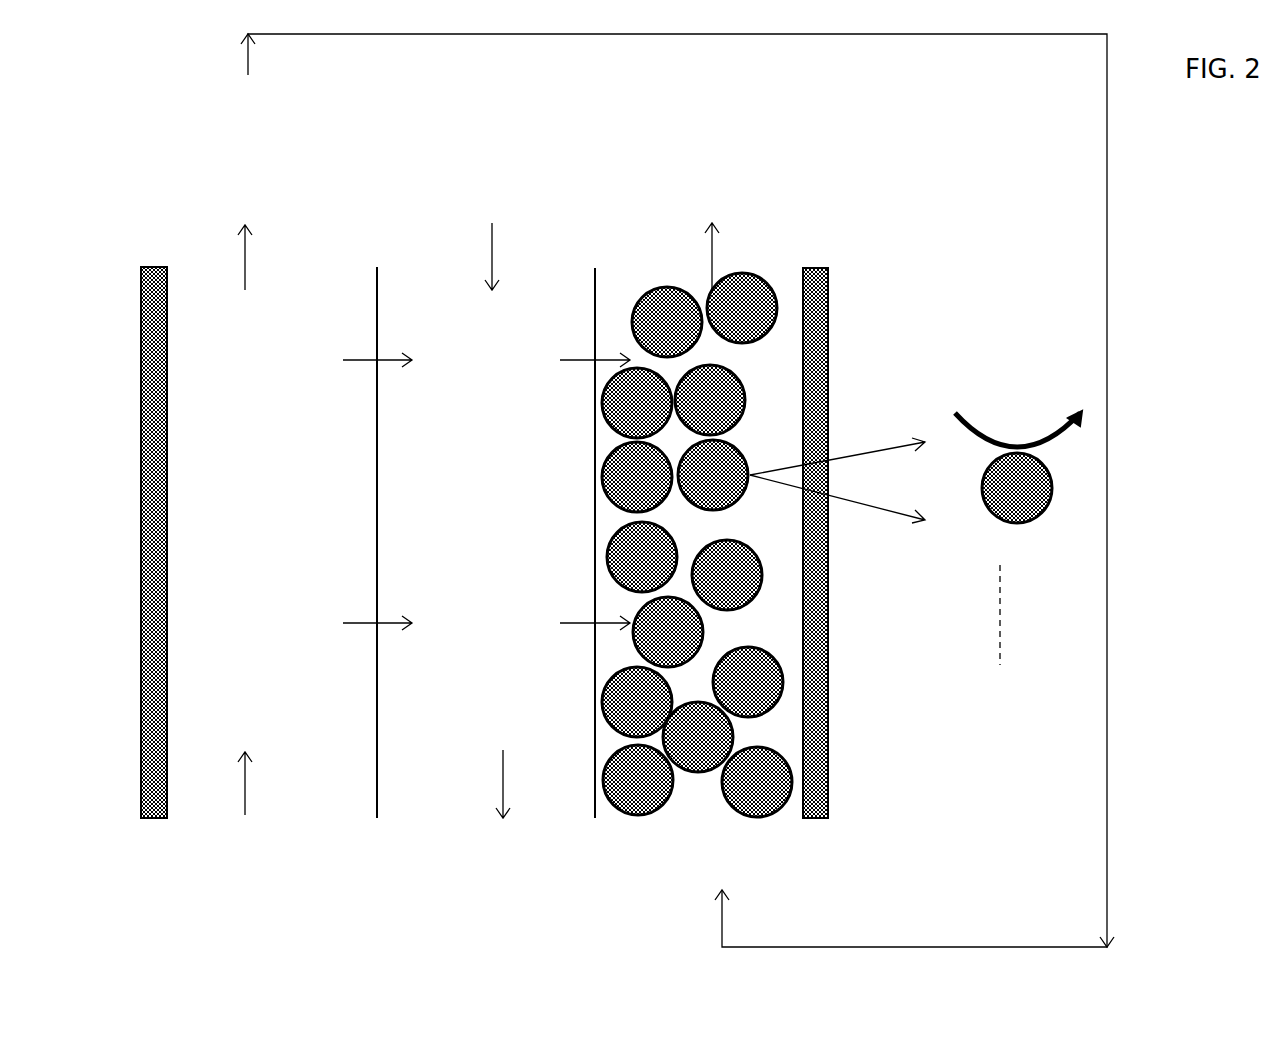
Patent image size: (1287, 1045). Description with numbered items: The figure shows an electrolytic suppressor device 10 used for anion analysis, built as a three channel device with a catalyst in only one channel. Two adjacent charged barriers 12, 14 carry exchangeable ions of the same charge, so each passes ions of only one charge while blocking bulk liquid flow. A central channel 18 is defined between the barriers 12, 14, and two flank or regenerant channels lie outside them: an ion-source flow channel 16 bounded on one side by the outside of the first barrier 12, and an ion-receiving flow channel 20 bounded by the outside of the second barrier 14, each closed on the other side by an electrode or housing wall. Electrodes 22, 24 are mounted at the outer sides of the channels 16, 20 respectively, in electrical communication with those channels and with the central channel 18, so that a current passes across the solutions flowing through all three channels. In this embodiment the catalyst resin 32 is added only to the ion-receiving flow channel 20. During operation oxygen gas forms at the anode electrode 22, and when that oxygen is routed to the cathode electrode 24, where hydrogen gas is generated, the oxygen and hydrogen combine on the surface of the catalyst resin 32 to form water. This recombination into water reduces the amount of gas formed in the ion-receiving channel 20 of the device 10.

The electrolytic suppressor device 10 is at (947, 287).
The first charged barrier 12 is at (377, 502).
The second charged barrier 14 is at (595, 502).
The ion-source flow channel 16 is at (225, 487).
The central channel 18 is at (497, 513).
The ion-receiving flow channel 20 is at (700, 482).
The electrode 22 is at (158, 484).
The electrode 24 is at (819, 484).
The catalyst resin 32 is at (785, 683).